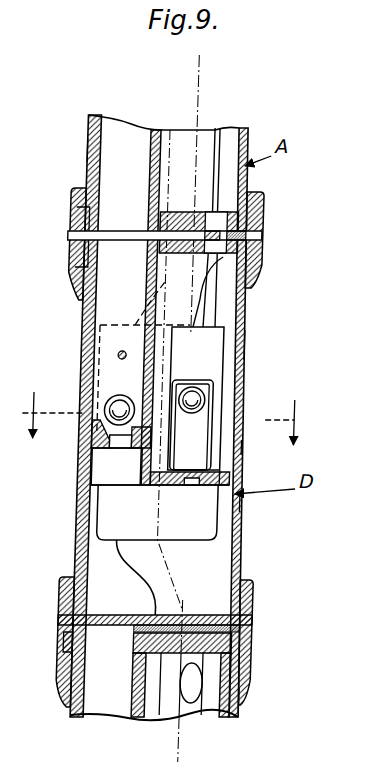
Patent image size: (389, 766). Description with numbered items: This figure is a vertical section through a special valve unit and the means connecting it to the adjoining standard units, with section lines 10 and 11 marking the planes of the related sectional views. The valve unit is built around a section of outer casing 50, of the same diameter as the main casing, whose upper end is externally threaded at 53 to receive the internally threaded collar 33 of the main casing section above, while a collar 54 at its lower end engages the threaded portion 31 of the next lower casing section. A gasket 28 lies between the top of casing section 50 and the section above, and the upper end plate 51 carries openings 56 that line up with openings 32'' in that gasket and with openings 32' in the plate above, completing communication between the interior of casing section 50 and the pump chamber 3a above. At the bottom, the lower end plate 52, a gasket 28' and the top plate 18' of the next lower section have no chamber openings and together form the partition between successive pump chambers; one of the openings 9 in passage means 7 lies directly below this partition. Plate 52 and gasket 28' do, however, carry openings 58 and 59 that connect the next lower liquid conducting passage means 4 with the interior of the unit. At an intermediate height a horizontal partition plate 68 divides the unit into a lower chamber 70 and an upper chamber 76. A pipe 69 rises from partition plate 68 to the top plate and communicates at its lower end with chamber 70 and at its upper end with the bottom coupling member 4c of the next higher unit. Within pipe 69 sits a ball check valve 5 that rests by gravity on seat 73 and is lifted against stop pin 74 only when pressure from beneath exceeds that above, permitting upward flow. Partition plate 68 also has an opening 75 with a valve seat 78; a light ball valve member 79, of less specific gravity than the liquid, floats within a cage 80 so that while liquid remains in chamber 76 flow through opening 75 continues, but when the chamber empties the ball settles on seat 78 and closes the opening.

The section line 10- 10 is at (222, 80).
The pump chamber space 3a is at (232, 150).
The opening in passage means 9 is at (262, 700).
The liquid conducting passage means 4 is at (50, 730).
The bottom coupling member 4c is at (98, 153).
The pipe 69 is at (94, 298).
The externally threaded upper end 53 is at (266, 248).
The opening in plate 34 32' is at (257, 199).
The gasket 28 is at (191, 204).
The internally threaded collar 33 is at (234, 238).
The opening in gasket 28 32'' is at (297, 227).
The openings in upper plate 56 is at (232, 262).
The upper end plate 51 is at (214, 300).
The outer casing section 50 is at (248, 345).
The chamber above partition plate 76 is at (235, 372).
The ball valve member 79 is at (208, 402).
The cage 80 is at (250, 447).
The valve seat 78 is at (250, 474).
The opening in partition plate 75 is at (250, 500).
The horizontal partition plate 68 is at (205, 490).
The valve seat 73 is at (114, 445).
The valve 5 is at (120, 405).
The stop pin 74 is at (129, 355).
The chamber below partition plate 70 is at (105, 565).
The lower end plate 52 is at (168, 590).
The opening in plate 52 58 is at (88, 614).
The collar 54 is at (272, 612).
The gasket 28' is at (187, 627).
The top plate 18' is at (228, 648).
The opening in gasket 28' 59 is at (109, 650).
The passage means 7 is at (164, 718).
The externally threaded upper end 31 is at (223, 686).
The section line 11- 11 is at (164, 418).